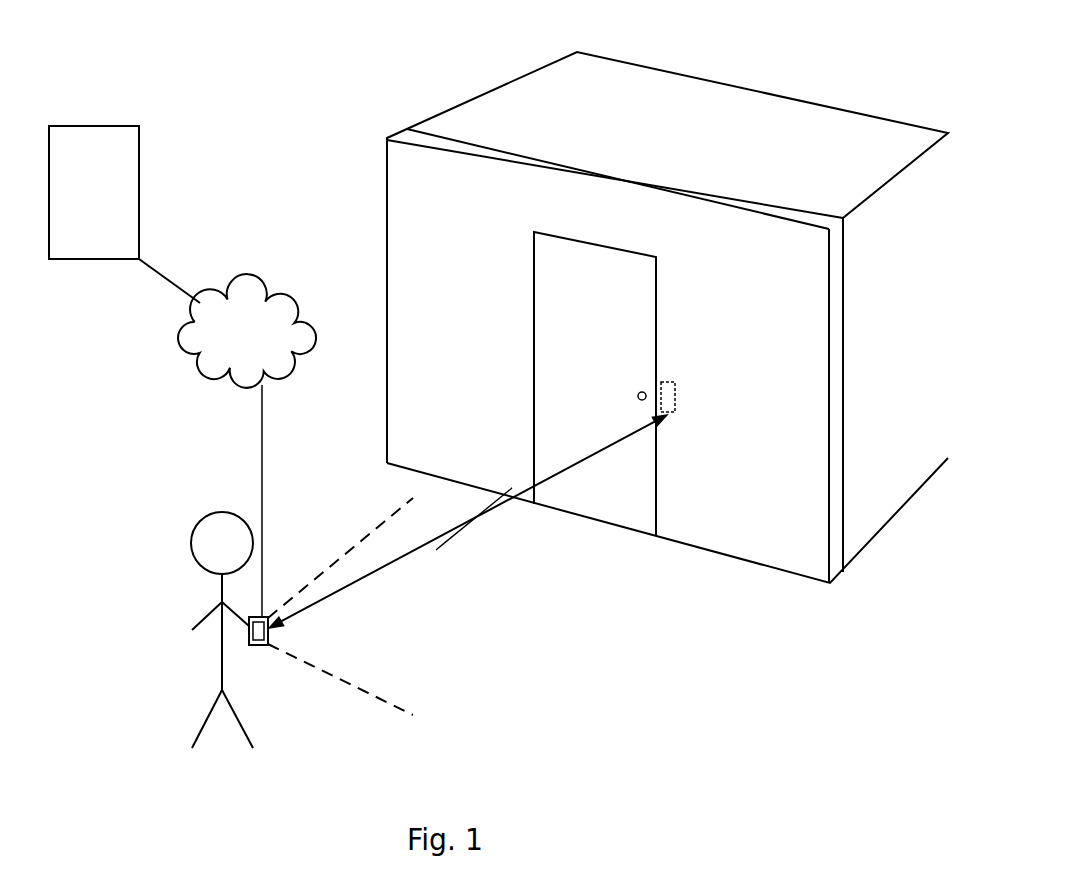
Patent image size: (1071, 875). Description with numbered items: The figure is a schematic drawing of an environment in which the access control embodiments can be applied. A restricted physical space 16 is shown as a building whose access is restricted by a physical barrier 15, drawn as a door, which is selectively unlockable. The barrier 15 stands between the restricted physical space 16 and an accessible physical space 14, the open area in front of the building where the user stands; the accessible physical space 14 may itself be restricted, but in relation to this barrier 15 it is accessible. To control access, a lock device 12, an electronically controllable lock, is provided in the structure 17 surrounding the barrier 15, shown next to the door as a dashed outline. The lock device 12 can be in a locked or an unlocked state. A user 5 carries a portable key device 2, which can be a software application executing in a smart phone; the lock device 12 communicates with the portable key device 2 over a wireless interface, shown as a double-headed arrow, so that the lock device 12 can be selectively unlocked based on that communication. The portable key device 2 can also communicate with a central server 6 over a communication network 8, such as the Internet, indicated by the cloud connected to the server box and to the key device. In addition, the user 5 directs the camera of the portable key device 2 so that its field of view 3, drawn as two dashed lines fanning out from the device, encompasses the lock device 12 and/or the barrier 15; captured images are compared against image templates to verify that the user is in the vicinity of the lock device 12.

The portable key device 2 is at (259, 646).
The field of view 3 is at (362, 690).
The user 5 is at (220, 652).
The central server 6 is at (86, 206).
The communication network 8 is at (238, 348).
The lock device 12 is at (675, 392).
The accessible physical space 14 is at (236, 128).
The physical barrier 15 is at (565, 291).
The physical space 16 is at (651, 134).
The structure 17 is at (754, 418).